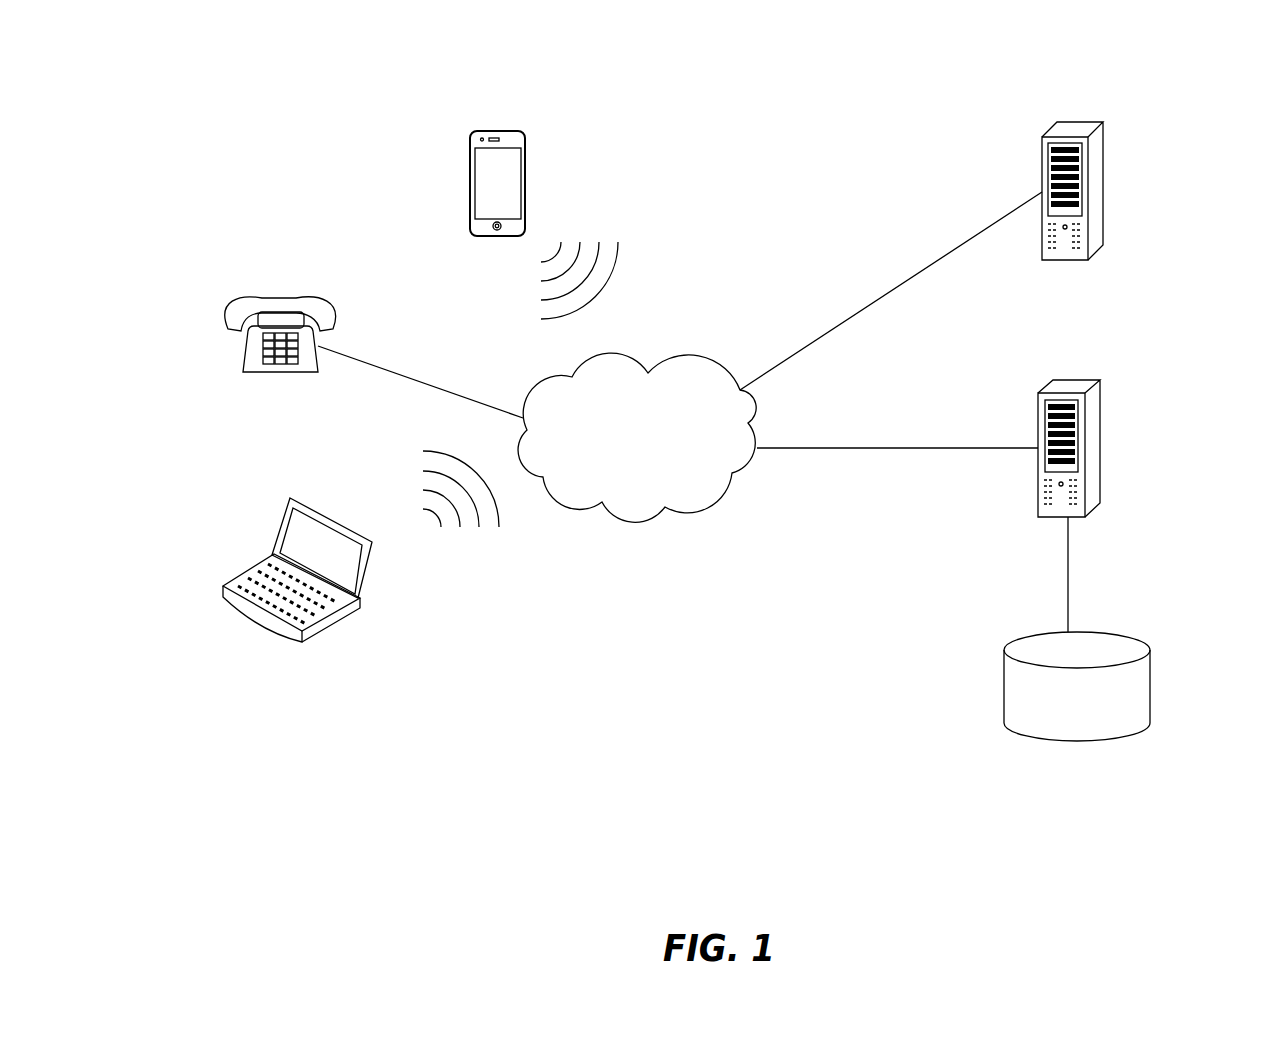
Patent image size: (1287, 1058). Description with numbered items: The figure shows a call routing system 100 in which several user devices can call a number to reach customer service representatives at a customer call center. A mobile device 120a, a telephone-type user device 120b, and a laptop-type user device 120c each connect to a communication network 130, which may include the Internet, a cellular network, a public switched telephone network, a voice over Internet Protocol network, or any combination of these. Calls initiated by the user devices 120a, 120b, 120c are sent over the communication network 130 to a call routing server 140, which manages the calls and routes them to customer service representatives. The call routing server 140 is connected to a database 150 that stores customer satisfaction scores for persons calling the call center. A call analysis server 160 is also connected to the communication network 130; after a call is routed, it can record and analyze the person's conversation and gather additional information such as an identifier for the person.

The call routing system 100 is at (202, 135).
The mobile device 120a is at (510, 133).
The user device 120b is at (330, 302).
The user device 120c is at (367, 572).
The communication network 130 is at (700, 360).
The call routing server 140 is at (1078, 380).
The database 150 is at (1130, 635).
The call analysis server 160 is at (1082, 122).